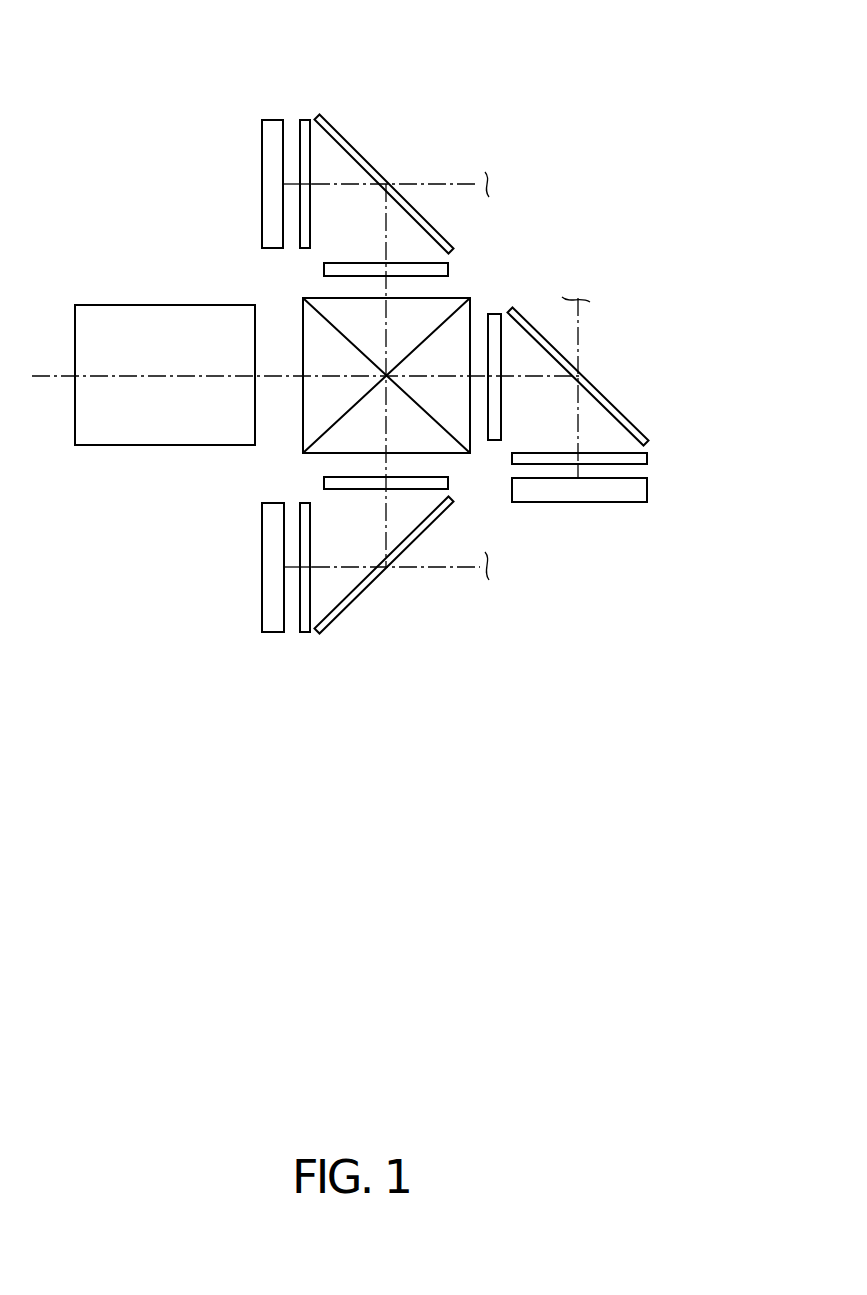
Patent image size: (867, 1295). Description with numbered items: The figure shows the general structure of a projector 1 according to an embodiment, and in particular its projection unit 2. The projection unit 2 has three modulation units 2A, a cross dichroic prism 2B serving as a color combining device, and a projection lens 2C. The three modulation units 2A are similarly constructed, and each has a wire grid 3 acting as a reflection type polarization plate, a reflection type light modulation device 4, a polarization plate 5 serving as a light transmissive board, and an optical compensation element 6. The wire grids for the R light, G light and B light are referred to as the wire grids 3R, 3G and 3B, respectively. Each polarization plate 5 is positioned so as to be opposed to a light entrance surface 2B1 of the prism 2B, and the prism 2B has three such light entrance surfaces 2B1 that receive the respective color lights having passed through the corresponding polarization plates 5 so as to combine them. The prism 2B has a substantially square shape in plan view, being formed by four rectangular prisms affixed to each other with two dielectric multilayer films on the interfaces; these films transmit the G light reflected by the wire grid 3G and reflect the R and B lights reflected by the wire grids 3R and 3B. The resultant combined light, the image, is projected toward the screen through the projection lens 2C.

The illumination device 1 is at (374, 365).
The projection unit 2 is at (612, 93).
The modulation unit 2A is at (337, 80).
The cross dichroic prism 2B is at (447, 307).
The light entrance surface 2B1 is at (322, 292).
The projection lens 2C is at (140, 445).
The wire grid 3 is at (516, 394).
The wire grid for R light 3R is at (337, 128).
The wire grid for G light 3G is at (612, 402).
The wire grid for B light 3B is at (338, 617).
The reflection type light modulation device 4 is at (277, 118).
The polarization plate 5 is at (343, 262).
The optical compensation element 6 is at (305, 118).